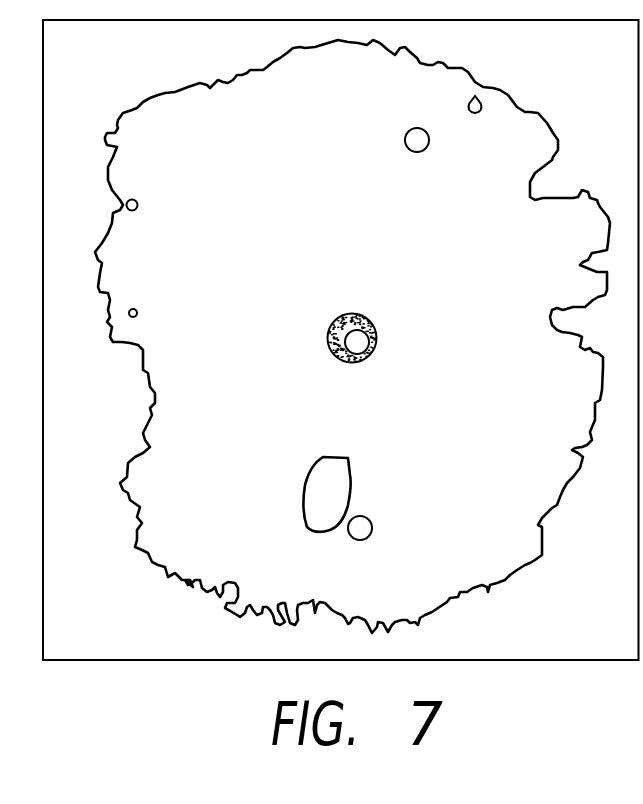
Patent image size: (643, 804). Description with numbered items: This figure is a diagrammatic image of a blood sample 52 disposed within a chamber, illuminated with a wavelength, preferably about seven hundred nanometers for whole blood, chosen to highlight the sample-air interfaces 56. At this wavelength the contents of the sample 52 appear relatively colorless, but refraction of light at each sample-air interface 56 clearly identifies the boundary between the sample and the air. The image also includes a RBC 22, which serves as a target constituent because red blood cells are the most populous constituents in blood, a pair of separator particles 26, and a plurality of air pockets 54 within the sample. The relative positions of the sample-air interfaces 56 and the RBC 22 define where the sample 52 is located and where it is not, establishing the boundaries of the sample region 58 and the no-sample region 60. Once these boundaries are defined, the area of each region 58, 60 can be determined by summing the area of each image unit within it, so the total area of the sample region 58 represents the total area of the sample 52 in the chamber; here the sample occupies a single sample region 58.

The RBC 22 is at (373, 320).
The separator particles 26 is at (410, 150).
The blood sample 52 is at (507, 582).
The air pockets 54 is at (477, 100).
The sample-air interface 56 is at (166, 578).
The sample region 58 is at (222, 180).
The no-sample region 60 is at (118, 67).